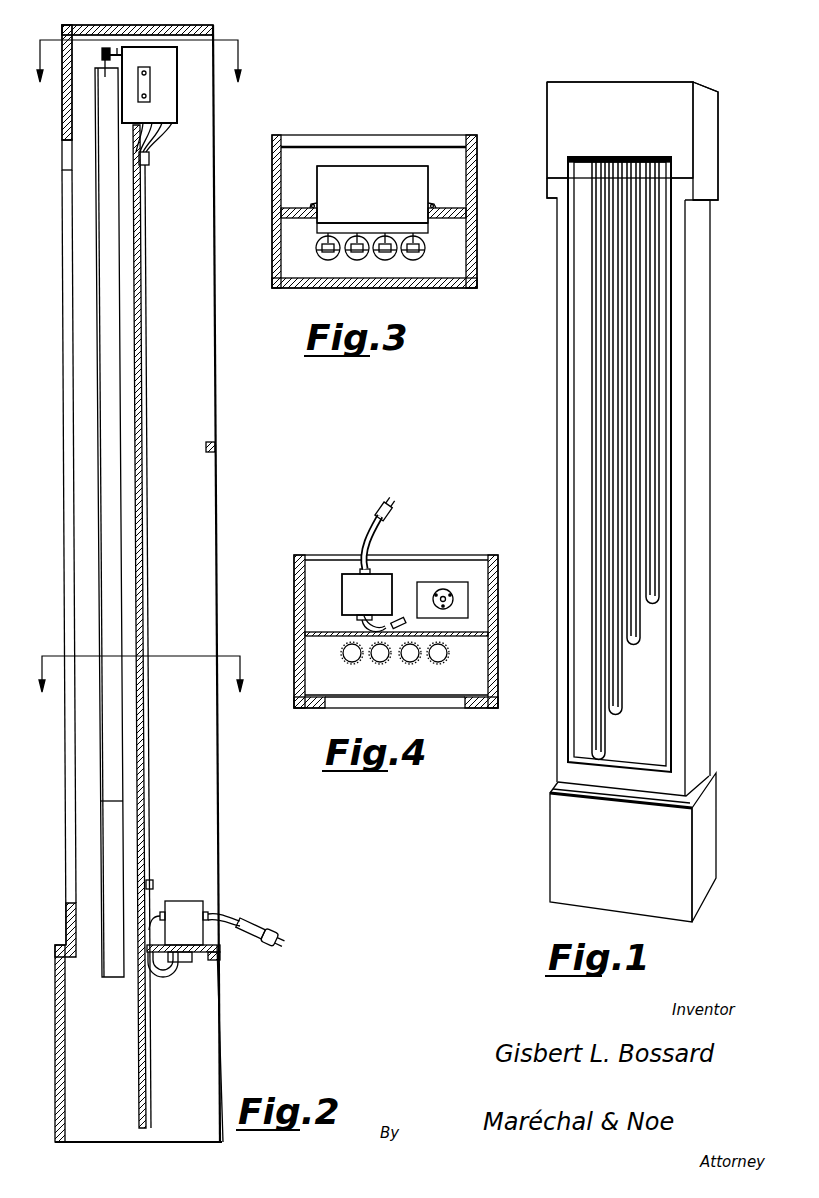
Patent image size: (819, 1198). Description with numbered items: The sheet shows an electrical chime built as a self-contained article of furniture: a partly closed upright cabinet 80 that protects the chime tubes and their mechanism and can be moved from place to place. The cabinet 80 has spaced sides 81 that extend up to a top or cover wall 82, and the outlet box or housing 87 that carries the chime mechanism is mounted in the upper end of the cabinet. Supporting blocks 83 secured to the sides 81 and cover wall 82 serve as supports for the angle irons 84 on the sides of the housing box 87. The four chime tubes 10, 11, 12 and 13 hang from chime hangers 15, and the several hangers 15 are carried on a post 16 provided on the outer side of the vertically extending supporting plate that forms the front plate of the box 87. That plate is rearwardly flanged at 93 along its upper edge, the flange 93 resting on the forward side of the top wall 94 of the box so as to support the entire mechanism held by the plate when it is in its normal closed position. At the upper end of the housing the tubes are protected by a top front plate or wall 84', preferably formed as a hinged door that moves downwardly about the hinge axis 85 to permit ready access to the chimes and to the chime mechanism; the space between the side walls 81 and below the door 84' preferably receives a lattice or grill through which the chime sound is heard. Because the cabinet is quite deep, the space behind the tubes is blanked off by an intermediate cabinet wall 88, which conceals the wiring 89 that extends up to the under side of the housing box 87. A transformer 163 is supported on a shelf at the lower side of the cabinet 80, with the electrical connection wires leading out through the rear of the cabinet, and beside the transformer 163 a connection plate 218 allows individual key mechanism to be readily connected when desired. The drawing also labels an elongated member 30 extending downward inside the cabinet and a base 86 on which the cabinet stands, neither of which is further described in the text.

In FIG. 4, the chime tube 10 is at (349, 664).
In FIG. 1, the chime tube 10 is at (601, 746).
In FIG. 4, the chime tube 11 is at (378, 664).
In FIG. 1, the chime tube 11 is at (617, 698).
In FIG. 4, the chime tube 12 is at (408, 664).
In FIG. 1, the chime tube 12 is at (634, 647).
In FIG. 4, the chime tube 13 is at (436, 664).
In FIG. 1, the chime tube 13 is at (652, 604).
In FIG. 2, the chime hanger 15 is at (102, 56).
In FIG. 2, the post 16 is at (117, 48).
In FIG. 2, the lamp support rod 30 is at (103, 74).
In FIG. 2, the upright cabinet 80 is at (72, 380).
In FIG. 1, the upright cabinet 80 is at (557, 388).
In FIG. 3, the cabinet side 81 is at (476, 253).
In FIG. 1, the cabinet side 81 is at (583, 449).
In FIG. 2, the top or cover wall 82 is at (160, 26).
In FIG. 1, the top or cover wall 82 is at (701, 82).
In FIG. 3, the supporting block 83 is at (445, 222).
In FIG. 2, the angle iron 84 is at (171, 84).
In FIG. 3, the angle iron 84 is at (401, 171).
In FIG. 2, the top front plate or wall 84' is at (46, 93).
In FIG. 1, the top front plate or wall 84' is at (620, 130).
In FIG. 1, the hinge axis 85 is at (558, 182).
In FIG. 1, the base 86 is at (572, 830).
In FIG. 2, the outlet box or housing 87 is at (170, 102).
In FIG. 3, the outlet box or housing 87 is at (412, 166).
In FIG. 2, the intermediate cabinet wall 88 is at (147, 771).
In FIG. 2, the wiring 89 is at (152, 838).
In FIG. 3, the rearward flange 93 is at (375, 223).
In FIG. 3, the top wall of the box 94 is at (372, 194).
In FIG. 2, the transformer 163 is at (190, 908).
In FIG. 4, the connection plate 218 is at (453, 590).